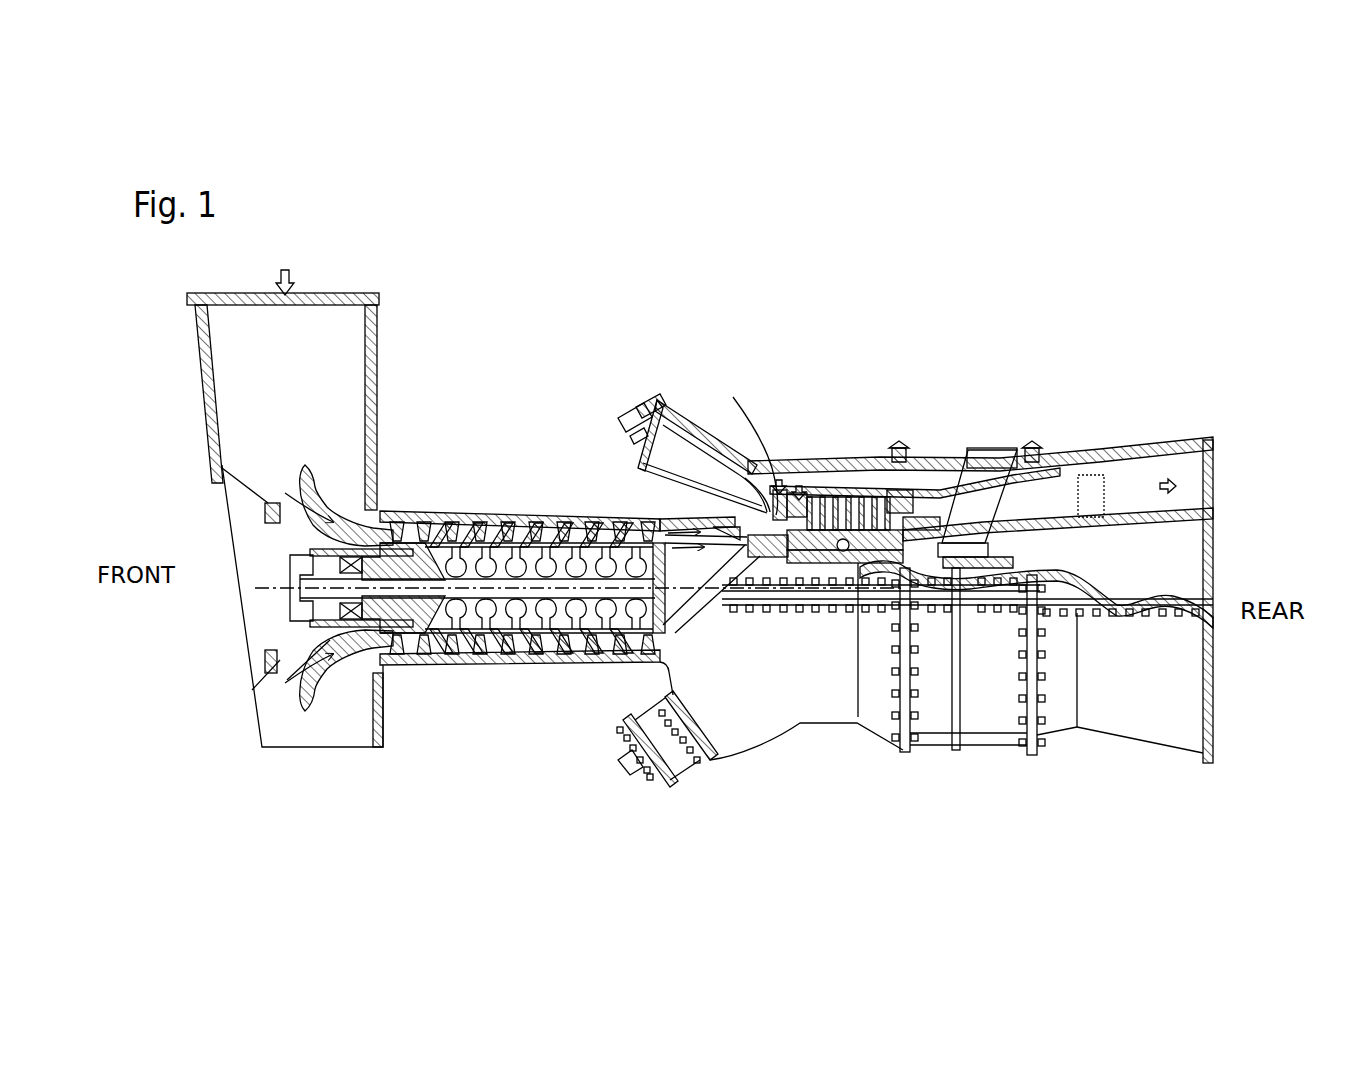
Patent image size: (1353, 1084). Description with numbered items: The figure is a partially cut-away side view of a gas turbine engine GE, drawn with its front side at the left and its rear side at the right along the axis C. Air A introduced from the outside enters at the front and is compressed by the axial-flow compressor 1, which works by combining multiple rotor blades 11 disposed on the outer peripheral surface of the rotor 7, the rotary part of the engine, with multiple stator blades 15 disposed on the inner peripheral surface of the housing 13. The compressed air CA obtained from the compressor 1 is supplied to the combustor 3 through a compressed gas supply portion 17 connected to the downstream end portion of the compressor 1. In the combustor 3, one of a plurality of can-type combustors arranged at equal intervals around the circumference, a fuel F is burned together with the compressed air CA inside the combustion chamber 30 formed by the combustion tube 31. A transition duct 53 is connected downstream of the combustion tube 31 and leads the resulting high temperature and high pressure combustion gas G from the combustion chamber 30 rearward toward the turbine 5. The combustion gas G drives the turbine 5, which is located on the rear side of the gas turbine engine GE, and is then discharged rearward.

The compressor 1 is at (533, 672).
The combustor 3 is at (686, 405).
The turbine 5 is at (845, 492).
The rotor 7 is at (686, 614).
The rotor blades 11 is at (426, 664).
The housing 13 is at (492, 518).
The stator blades 15 is at (437, 521).
The compressed gas supply portion 17 is at (692, 518).
The combustion chamber 30 is at (697, 468).
The combustion tube 31 is at (700, 418).
The transition duct 53 is at (765, 470).
The air A is at (296, 280).
The axis C is at (272, 589).
The compressed air CA is at (662, 517).
The fuel F is at (606, 410).
The combustion gas G is at (773, 462).
The gas turbine engine GE is at (527, 392).